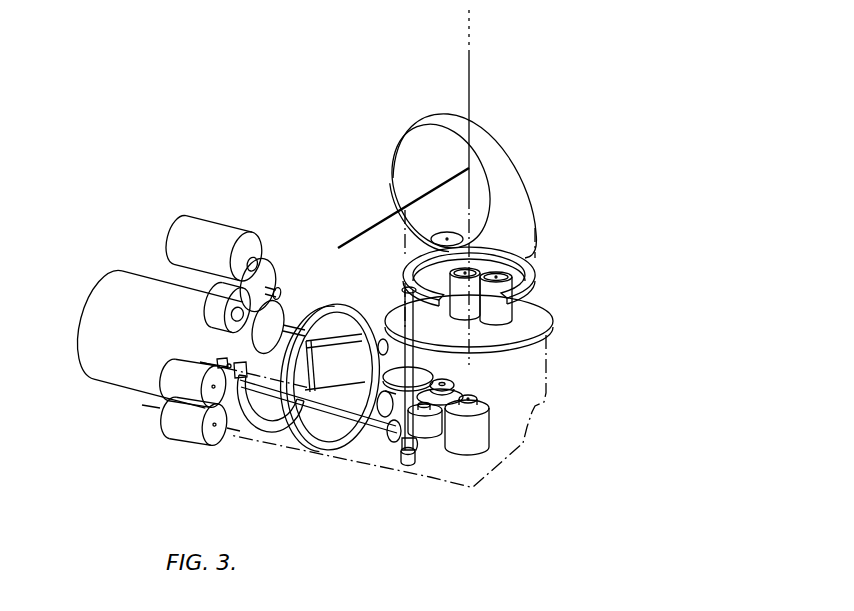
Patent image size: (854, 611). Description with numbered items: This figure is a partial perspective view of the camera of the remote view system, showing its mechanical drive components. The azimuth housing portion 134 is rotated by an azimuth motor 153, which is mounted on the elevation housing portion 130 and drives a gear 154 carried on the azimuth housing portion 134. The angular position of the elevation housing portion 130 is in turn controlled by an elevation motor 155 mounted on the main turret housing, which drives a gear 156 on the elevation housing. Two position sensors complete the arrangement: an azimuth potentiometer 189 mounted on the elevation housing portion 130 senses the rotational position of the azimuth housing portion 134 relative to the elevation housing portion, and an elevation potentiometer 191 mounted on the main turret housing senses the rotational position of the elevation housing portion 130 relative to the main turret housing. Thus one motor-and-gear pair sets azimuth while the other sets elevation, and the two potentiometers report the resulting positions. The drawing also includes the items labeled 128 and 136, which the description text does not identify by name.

The frame shaft assembly 128 is at (265, 447).
The elevation housing portion 130 is at (535, 405).
The azimuth housing portion 134 is at (511, 158).
The axis of rotation 136 is at (469, 53).
The azimuth motor 153 is at (467, 440).
The gear 154 is at (403, 274).
The elevation motor 155 is at (168, 261).
The gear 156 is at (347, 305).
The azimuth potentiometer 189 is at (478, 308).
The elevation potentiometer 191 is at (187, 390).